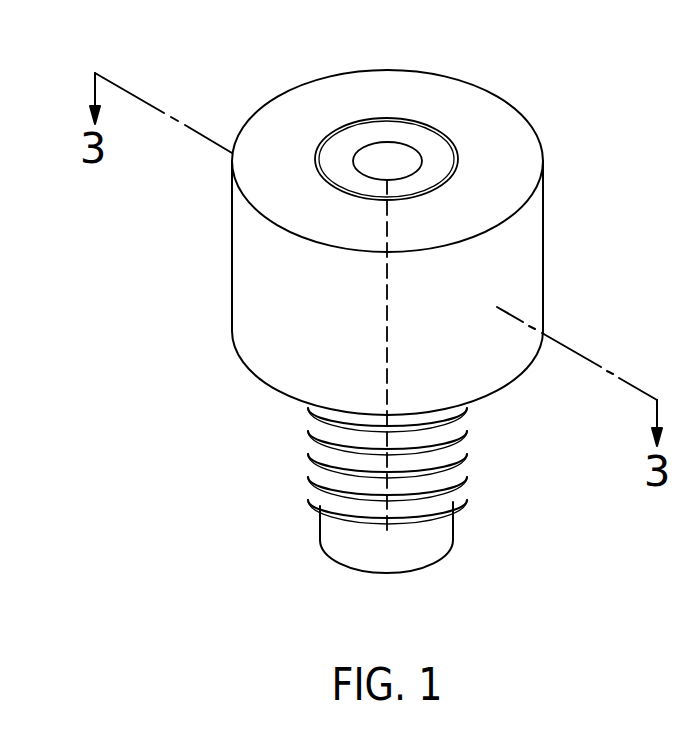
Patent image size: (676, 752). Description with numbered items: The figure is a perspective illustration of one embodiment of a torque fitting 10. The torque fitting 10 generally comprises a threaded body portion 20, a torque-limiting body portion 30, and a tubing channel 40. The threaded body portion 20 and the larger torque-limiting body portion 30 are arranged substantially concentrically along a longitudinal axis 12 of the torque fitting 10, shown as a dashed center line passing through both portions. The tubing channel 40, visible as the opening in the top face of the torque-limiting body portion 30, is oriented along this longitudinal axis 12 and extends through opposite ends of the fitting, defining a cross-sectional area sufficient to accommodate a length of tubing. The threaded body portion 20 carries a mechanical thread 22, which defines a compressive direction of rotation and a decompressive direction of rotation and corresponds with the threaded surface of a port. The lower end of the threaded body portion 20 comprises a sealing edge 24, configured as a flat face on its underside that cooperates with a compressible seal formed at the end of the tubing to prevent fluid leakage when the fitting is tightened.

The torque fitting 10 is at (258, 542).
The longitudinal axis 12 is at (387, 333).
The threaded body portion 20 is at (452, 518).
The mechanical thread 22 is at (310, 468).
The sealing edge 24 is at (433, 567).
The torque-limiting body portion 30 is at (535, 268).
The tubing channel 40 is at (413, 157).